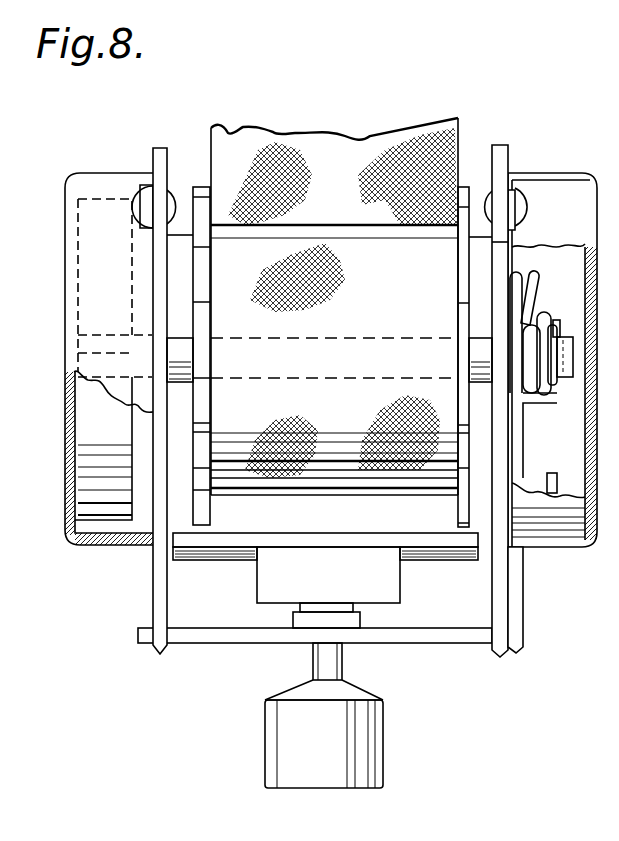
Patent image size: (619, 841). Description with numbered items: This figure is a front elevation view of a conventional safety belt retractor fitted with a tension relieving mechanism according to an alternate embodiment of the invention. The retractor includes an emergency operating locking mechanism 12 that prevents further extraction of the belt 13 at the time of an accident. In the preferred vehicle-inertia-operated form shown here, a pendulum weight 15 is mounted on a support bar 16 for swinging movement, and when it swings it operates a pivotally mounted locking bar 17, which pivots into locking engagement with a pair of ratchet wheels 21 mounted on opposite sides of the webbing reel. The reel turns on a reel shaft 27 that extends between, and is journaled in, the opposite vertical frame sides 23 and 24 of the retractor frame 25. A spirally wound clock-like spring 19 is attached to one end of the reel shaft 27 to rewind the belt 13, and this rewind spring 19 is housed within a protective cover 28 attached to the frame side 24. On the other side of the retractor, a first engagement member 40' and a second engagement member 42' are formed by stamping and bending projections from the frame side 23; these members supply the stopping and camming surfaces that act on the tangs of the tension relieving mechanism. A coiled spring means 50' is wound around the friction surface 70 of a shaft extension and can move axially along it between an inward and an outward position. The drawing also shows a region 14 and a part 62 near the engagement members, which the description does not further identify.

The emergency operating locking mechanism 12 is at (250, 748).
The belt 13 is at (295, 153).
The housing side wall 14 is at (560, 306).
The pendulum weight 15 is at (370, 746).
The support bar 16 is at (225, 640).
The locking bar 17 is at (402, 512).
The spirally wound clock-like spring 19 is at (82, 487).
The ratchet wheels 21 is at (206, 270).
The frame side 23 is at (497, 617).
The frame side 24 is at (157, 563).
The retractor frame 25 is at (495, 580).
The reel shaft 27 is at (175, 352).
The protective cover 28 is at (83, 172).
The first engagement member 40' is at (540, 298).
The second engagement member 42' is at (550, 468).
The coiled spring means 50' is at (543, 435).
The roller assembly 62 is at (535, 337).
The friction surface 70 is at (562, 383).